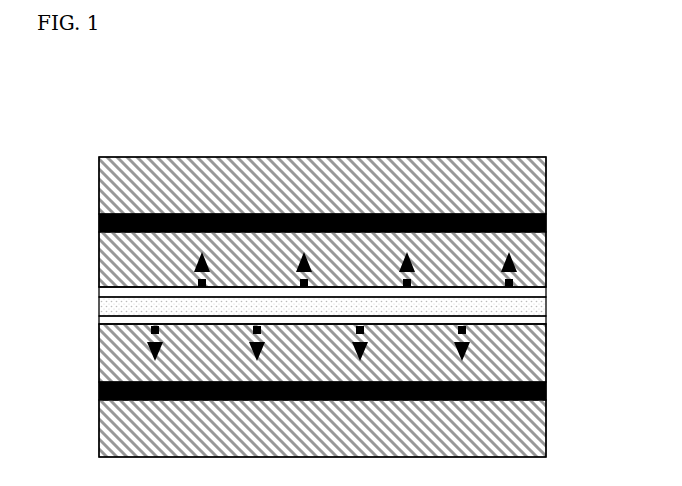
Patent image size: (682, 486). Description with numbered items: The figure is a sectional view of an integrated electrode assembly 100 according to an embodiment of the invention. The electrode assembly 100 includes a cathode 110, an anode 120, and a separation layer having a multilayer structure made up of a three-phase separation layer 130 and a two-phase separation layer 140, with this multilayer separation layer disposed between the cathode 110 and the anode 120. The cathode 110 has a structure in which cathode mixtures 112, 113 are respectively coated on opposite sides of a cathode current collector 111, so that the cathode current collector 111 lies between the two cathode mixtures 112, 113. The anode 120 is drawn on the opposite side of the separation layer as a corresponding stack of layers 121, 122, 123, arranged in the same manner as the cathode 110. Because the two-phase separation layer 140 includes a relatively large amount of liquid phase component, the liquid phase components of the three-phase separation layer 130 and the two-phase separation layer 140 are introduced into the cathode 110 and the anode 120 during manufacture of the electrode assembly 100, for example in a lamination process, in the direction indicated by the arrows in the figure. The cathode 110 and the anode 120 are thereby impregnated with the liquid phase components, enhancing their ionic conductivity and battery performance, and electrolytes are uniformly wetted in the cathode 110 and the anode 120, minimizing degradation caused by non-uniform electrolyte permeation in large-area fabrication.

The integrated electrode assembly 100 is at (78, 138).
The cathode 110 is at (99, 157).
The cathode current collector 111 is at (546, 221).
The cathode mixture 112 is at (537, 186).
The cathode mixture 113 is at (537, 260).
The anode 120 is at (99, 324).
The second electrode layer 121 is at (546, 389).
The second polarized layer 122 is at (537, 352).
The second outer layer 123 is at (537, 428).
The three-phase separation layer 130 is at (537, 306).
The two-phase separation layer 140 is at (105, 291).